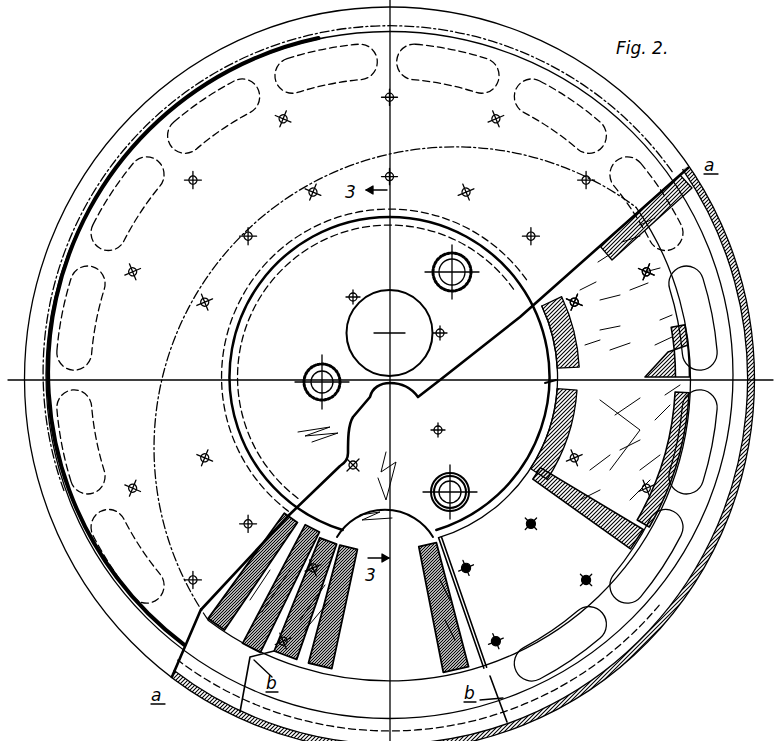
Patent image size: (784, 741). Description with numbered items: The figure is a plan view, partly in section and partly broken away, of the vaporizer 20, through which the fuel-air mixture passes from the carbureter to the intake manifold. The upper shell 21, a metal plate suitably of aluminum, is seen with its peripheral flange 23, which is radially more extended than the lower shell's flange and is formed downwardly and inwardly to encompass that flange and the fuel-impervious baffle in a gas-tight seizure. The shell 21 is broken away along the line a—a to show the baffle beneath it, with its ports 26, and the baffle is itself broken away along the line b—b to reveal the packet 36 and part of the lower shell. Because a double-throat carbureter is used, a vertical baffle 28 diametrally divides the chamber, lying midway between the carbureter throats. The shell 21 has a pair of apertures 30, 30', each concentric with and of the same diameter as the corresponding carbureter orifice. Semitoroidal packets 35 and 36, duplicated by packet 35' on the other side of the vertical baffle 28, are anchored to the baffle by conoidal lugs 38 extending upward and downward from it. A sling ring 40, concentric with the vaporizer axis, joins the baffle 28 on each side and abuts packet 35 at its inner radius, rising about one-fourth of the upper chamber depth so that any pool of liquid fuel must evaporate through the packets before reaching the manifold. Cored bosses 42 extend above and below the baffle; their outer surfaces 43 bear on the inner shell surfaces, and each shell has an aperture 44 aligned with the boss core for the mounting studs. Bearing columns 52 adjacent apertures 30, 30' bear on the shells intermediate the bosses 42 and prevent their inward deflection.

The vaporizer 20 is at (140, 108).
The shell 21 is at (491, 346).
The flange 23 is at (240, 56).
The ports 26 is at (110, 547).
The vertical baffle 28 is at (190, 383).
The aperture 30 is at (365, 467).
The aperture 30' is at (371, 333).
The packet 35 is at (442, 435).
The packet 35' is at (533, 392).
The packet 36 is at (433, 633).
The conoidal lugs 38 is at (205, 299).
The sling ring 40 is at (500, 504).
The cored bosses 42 is at (440, 262).
The outer surfaces 43 is at (443, 483).
The aperture 44 is at (458, 280).
The bearing columns 52 is at (357, 297).